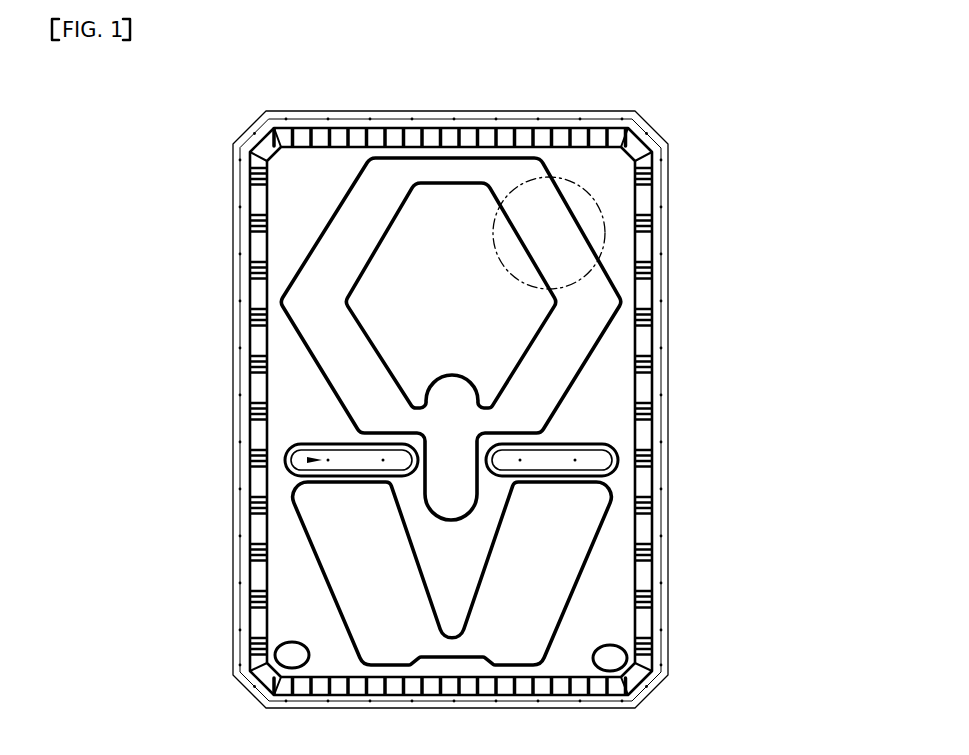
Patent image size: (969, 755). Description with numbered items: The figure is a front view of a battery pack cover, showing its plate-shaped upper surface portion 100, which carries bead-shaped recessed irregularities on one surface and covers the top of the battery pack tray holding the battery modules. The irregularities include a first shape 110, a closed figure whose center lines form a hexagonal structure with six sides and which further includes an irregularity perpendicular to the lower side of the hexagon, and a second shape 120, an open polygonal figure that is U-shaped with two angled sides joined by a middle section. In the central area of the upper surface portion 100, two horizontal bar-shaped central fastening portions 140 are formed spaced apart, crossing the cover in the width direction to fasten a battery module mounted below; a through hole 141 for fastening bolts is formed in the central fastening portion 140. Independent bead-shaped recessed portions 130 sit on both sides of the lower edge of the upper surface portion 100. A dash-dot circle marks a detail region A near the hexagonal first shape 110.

The upper surface portion 100 is at (293, 220).
The first shape 110 is at (583, 318).
The second shape 120 is at (563, 539).
The bead-shaped recessed portions 130 is at (627, 653).
The central fastening portion 140 is at (615, 457).
The through hole 141 is at (283, 458).
The detail region A is at (600, 220).